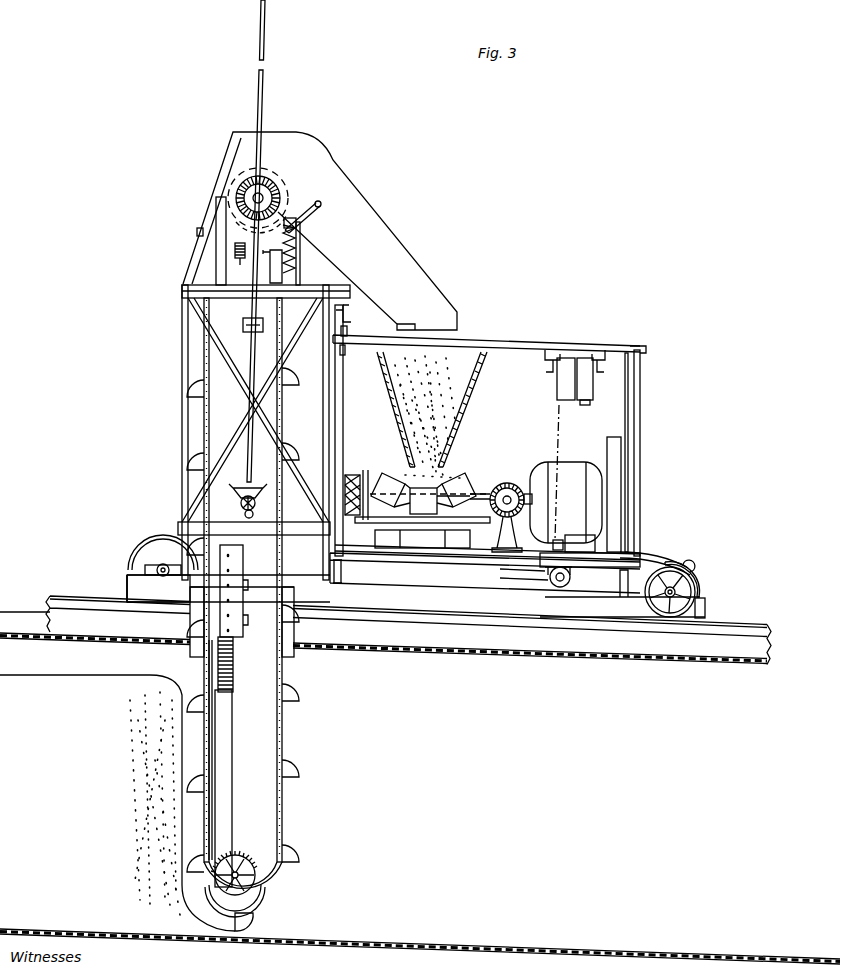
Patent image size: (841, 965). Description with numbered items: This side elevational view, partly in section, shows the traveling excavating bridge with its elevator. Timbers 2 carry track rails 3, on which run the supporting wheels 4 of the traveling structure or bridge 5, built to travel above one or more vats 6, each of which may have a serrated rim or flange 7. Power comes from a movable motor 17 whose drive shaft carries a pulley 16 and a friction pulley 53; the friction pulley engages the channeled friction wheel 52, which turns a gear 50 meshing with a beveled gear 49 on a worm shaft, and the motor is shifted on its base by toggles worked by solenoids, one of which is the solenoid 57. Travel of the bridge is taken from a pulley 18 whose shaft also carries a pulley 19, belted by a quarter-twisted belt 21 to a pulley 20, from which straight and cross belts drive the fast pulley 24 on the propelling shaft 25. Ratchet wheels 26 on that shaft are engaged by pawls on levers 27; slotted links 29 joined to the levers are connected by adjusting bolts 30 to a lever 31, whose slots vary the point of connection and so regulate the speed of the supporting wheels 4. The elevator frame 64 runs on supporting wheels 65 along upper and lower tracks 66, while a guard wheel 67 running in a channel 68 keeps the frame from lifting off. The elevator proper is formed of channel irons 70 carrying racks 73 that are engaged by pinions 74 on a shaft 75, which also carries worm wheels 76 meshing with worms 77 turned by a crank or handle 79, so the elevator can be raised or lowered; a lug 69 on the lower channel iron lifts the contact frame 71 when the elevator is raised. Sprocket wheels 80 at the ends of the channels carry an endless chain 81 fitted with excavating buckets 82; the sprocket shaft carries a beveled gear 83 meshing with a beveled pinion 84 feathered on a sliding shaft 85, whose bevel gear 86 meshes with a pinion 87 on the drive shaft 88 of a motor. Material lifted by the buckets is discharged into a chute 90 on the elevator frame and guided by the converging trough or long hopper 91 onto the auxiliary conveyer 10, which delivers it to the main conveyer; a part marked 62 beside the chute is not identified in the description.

The timbers 2 is at (420, 798).
The track rails 3 is at (96, 607).
The supporting wheels 4 is at (711, 587).
The traveling structure or bridge 5 is at (498, 464).
The vats 6 is at (198, 803).
The serrated rim or flange 7 is at (350, 652).
The auxiliary conveyer 10 is at (446, 481).
The pulley 16 is at (509, 486).
The movable motor 17 is at (566, 502).
The pulley 18 is at (591, 377).
The pulley 19 is at (560, 375).
The pulley 20 is at (571, 581).
The quarter-twisted belt 21 is at (562, 420).
The fast pulley 24 is at (694, 575).
The propelling shaft 25 is at (697, 594).
The ratchet wheels 26 is at (705, 606).
The levers 27 is at (684, 563).
The slotted links 29 is at (647, 553).
The adjusting bolts 30 is at (537, 578).
The lever 31 is at (533, 570).
The beveled gear 49 is at (495, 497).
The gear 50 is at (510, 513).
The channeled friction wheel 52 is at (621, 476).
The friction pulley 53 is at (629, 498).
The solenoid 57 is at (574, 543).
The chute 62 is at (318, 510).
The elevator frame 64 is at (238, 443).
The supporting wheels 65 is at (351, 319).
The tracks 66 is at (348, 333).
The guard wheel 67 is at (331, 344).
The channel 68 is at (345, 353).
The lug or projection 69 is at (258, 872).
The channel irons 70 is at (243, 764).
The contact frame 71 is at (244, 598).
The racks 73 is at (233, 679).
The pinions 74 is at (240, 258).
The shaft 75 is at (267, 266).
The worm wheels 76 is at (296, 258).
The worms 77 is at (293, 240).
The crank or handle 79 is at (311, 213).
The sprocket wheels 80 is at (318, 206).
The endless chain 81 is at (278, 343).
The excavating buckets 82 is at (197, 232).
The beveled gear 83 is at (272, 188).
The beveled pinion 84 is at (222, 206).
The sliding shaft 85 is at (263, 324).
The bevel gear 86 is at (256, 490).
The pinion 87 is at (256, 505).
The drive shaft 88 is at (255, 519).
The chute 90 is at (320, 231).
The converging trough or long hopper 91 is at (397, 426).